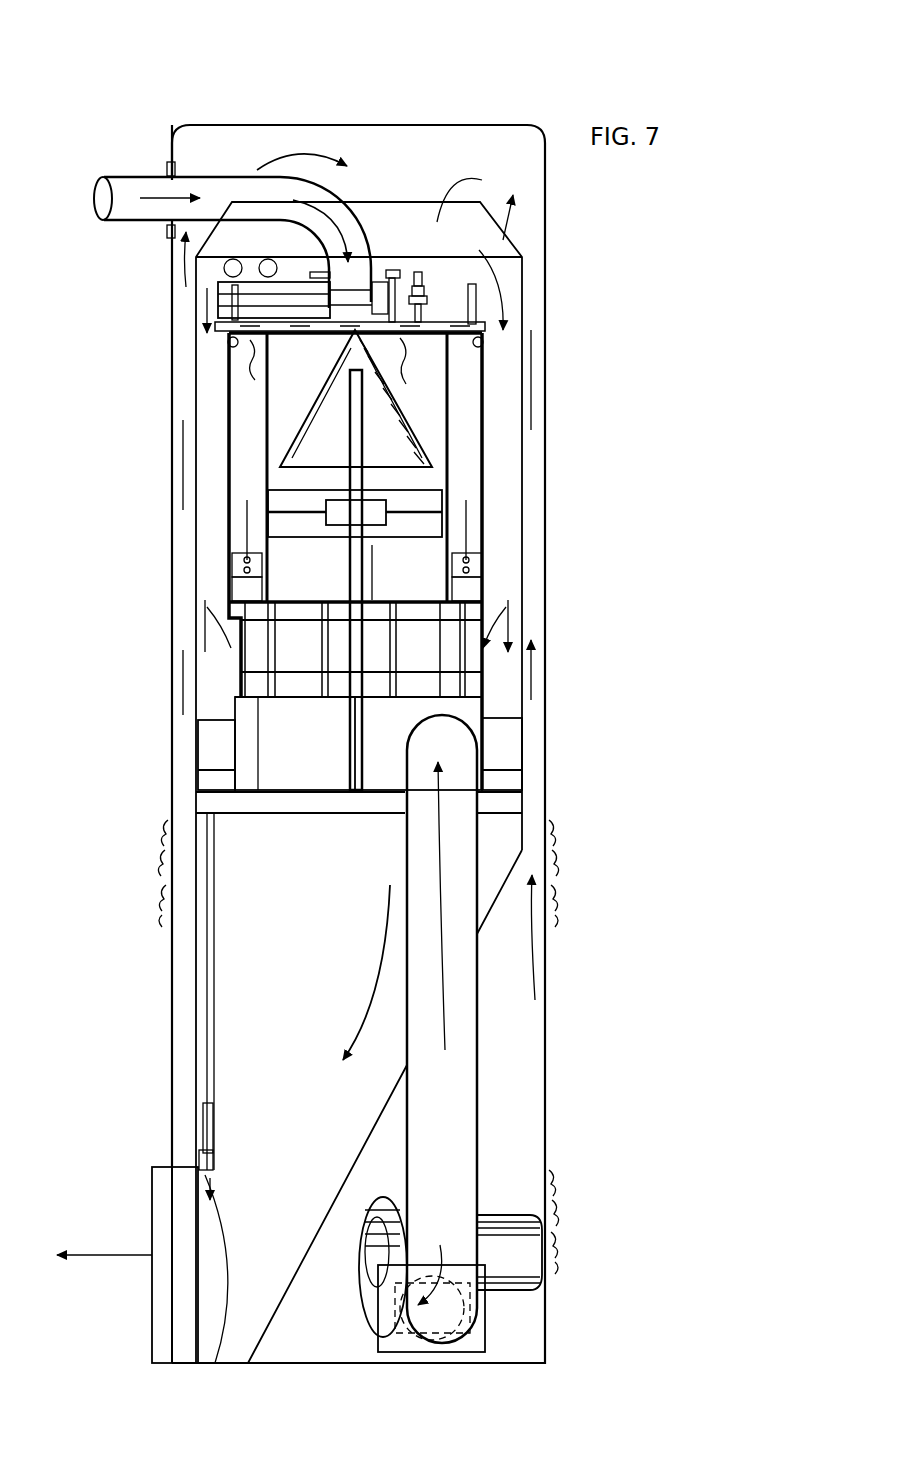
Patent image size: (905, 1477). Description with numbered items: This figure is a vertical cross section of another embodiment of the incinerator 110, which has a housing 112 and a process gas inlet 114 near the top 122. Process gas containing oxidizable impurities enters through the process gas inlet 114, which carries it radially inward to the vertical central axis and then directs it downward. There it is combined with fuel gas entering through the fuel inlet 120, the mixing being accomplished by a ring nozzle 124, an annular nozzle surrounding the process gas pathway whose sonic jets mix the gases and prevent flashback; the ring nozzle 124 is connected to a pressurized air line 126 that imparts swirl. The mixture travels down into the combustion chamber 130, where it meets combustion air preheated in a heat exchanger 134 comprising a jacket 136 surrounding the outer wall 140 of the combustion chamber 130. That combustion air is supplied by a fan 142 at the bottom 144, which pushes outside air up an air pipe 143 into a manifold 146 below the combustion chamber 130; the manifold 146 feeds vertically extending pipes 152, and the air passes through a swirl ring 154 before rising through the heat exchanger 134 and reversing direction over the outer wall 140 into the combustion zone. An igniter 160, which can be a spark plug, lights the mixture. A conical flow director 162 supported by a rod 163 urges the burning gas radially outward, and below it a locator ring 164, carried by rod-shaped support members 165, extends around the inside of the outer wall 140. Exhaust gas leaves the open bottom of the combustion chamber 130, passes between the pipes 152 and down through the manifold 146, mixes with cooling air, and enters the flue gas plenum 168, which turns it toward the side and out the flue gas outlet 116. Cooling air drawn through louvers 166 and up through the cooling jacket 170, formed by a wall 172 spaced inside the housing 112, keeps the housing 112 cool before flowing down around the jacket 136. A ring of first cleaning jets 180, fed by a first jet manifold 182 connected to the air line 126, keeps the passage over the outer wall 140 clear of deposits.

The incinerator 110 is at (538, 105).
The housing 112 is at (546, 732).
The process gas inlet 114 is at (102, 180).
The flue gas outlet 116 is at (160, 1168).
The fuel inlet 120 is at (298, 284).
The top 122 is at (405, 125).
The ring nozzle 124 is at (372, 286).
The pressurized air line 126 is at (252, 290).
The combustion chamber 130 is at (315, 397).
The heat exchanger 134 is at (246, 426).
The jacket 136 is at (228, 402).
The outer wall 140 is at (262, 352).
The fan 142 is at (368, 1268).
The air pipe 143 is at (465, 1029).
The bottom 144 is at (432, 1364).
The manifold 146 is at (245, 748).
The vertically extending pipes 152 is at (490, 632).
The swirl ring 154 is at (485, 566).
The igniter 160 is at (422, 278).
The flow director 162 is at (380, 392).
The rod 163 is at (370, 566).
The locator ring 164 is at (426, 498).
The rod-shaped support members 165 is at (316, 527).
The louvers 166 is at (166, 872).
The flue gas plenum 168 is at (345, 1130).
The cooling jacket 170 is at (182, 459).
The cooling jacket wall 172 is at (190, 345).
The first cleaning jets 180 is at (396, 352).
The first jet manifold 182 is at (488, 336).